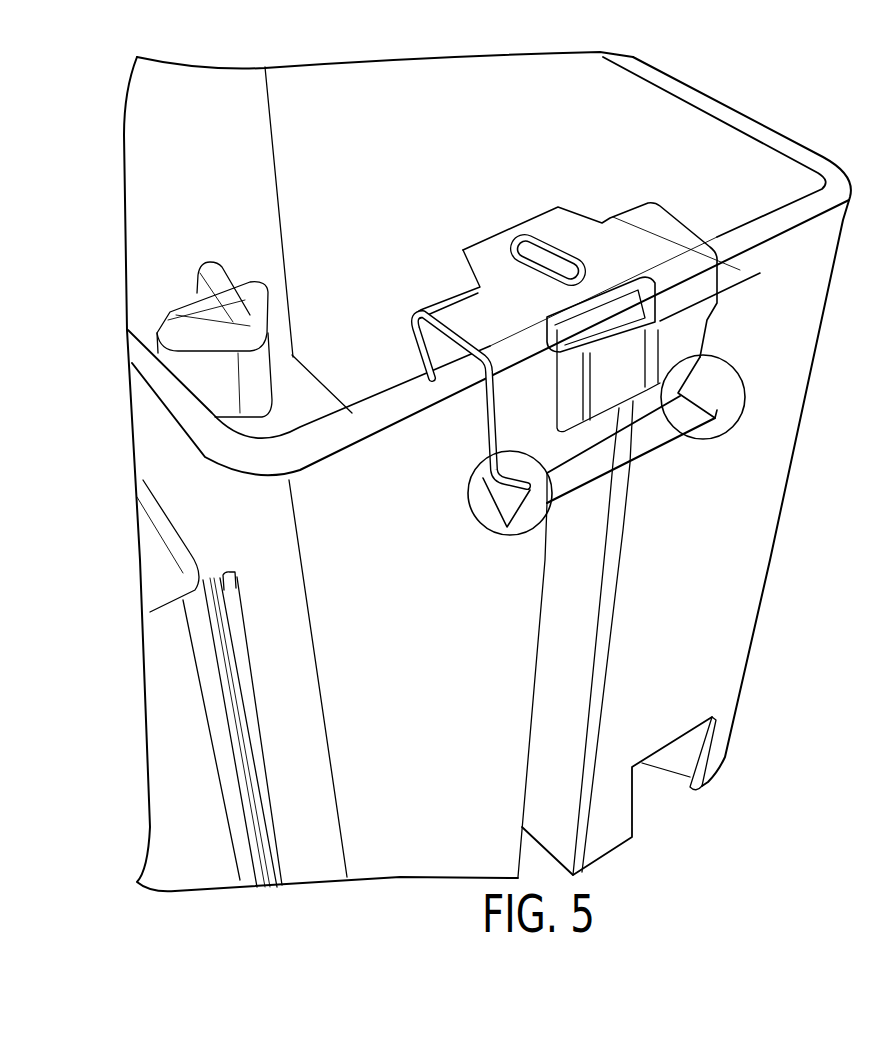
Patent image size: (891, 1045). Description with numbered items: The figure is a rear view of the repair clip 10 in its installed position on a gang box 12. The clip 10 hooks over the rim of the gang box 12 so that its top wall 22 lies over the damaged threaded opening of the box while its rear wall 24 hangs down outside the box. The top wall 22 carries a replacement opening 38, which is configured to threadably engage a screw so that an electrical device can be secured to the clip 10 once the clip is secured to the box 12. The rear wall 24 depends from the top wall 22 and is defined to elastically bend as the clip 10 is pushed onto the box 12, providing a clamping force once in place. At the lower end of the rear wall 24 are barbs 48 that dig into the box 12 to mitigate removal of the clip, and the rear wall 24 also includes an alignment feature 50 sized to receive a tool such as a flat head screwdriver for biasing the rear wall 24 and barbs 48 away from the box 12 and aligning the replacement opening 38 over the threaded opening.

The repair clip 10 is at (742, 236).
The gang box 12 is at (727, 115).
The top wall 22 is at (483, 337).
The rear wall 24 is at (690, 342).
The replacement opening 38 is at (533, 237).
The barbs 48 is at (745, 403).
The alignment feature 50 is at (690, 309).